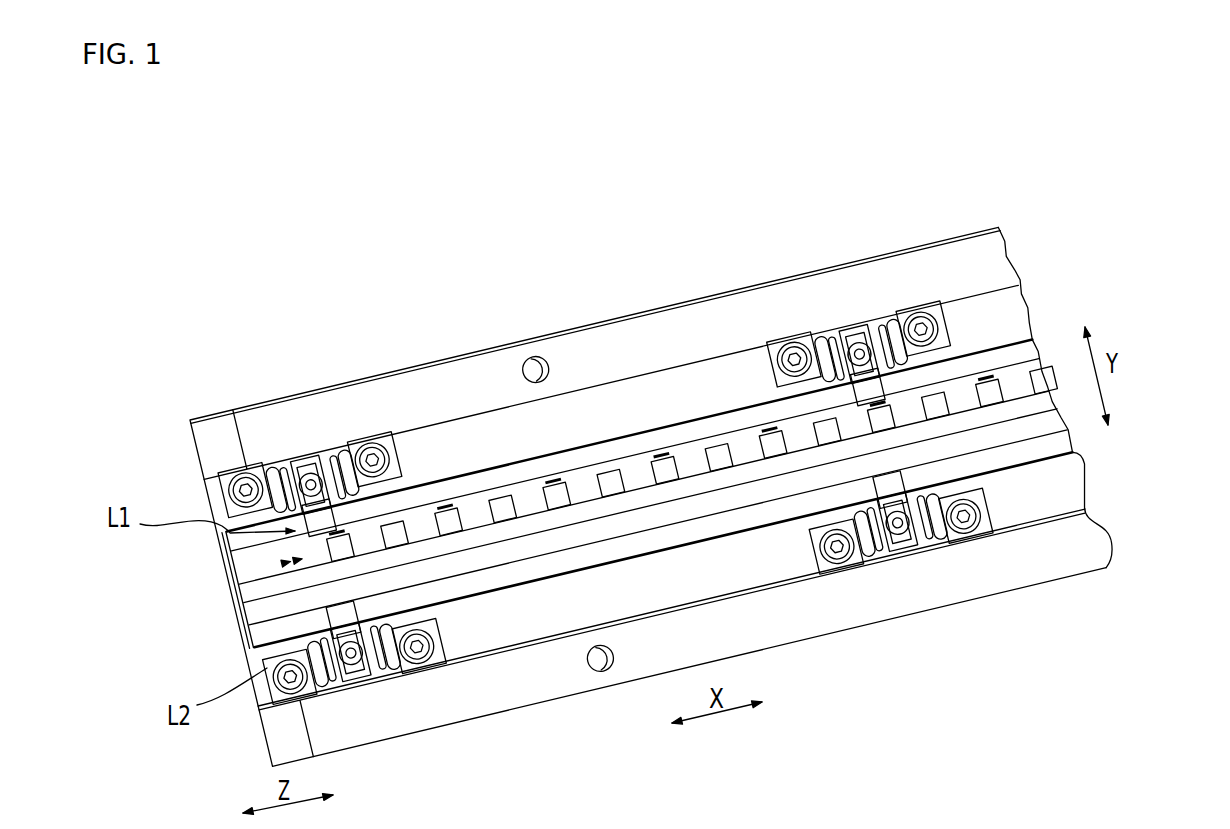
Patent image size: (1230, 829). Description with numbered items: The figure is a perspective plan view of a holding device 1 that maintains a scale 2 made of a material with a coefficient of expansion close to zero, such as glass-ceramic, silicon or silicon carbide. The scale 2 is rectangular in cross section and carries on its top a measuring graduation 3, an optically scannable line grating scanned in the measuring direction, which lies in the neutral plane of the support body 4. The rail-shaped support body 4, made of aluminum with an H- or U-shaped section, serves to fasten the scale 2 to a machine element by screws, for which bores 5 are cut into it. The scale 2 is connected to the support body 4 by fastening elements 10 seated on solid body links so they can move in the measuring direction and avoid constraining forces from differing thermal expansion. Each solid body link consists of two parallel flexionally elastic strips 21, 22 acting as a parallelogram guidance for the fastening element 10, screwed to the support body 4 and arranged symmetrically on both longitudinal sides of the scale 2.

The holding device 1 is at (600, 305).
The scale 2 is at (445, 500).
The measuring graduation 3 is at (540, 540).
The support body 4 is at (685, 338).
The bores 5 is at (538, 378).
The fastening elements 10 is at (891, 383).
The flexionally elastic strip 21 is at (300, 480).
The flexionally elastic strip 22 is at (343, 485).